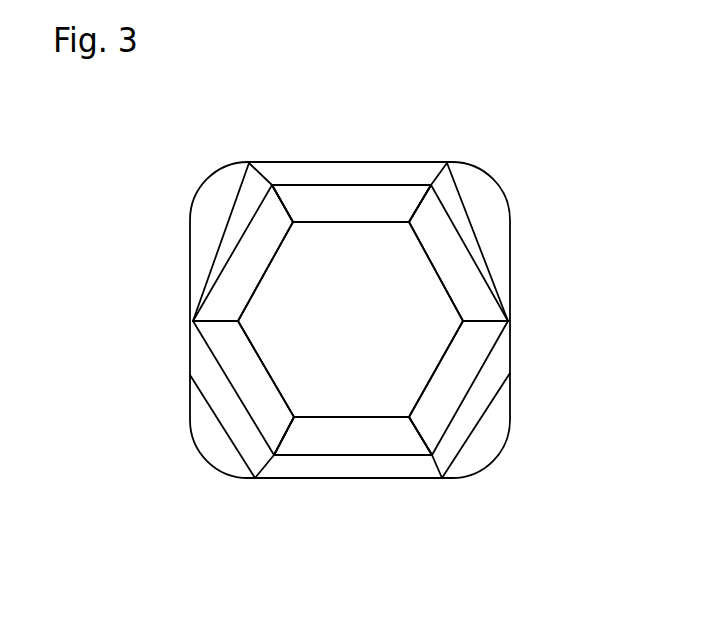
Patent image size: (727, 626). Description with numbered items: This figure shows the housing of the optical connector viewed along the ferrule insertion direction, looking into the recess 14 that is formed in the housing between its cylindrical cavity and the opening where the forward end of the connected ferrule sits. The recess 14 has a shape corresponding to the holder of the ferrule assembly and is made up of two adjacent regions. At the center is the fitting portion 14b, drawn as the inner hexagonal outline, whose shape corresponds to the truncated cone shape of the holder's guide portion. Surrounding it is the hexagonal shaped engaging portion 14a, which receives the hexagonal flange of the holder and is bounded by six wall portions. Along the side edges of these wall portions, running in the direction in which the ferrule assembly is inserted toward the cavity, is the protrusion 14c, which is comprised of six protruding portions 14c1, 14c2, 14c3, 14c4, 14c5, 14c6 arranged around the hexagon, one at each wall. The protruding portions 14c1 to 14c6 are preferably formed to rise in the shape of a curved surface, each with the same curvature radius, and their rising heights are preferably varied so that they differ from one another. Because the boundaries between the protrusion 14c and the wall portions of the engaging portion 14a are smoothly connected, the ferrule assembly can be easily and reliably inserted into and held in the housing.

The recess 14 is at (409, 157).
The engaging portion 14a is at (450, 218).
The fitting portion 14b is at (443, 268).
The protrusion 14c is at (203, 364).
The protruding portion 14c1 is at (290, 166).
The protruding portion 14c2 is at (492, 281).
The protruding portion 14c3 is at (497, 369).
The protruding portion 14c4 is at (372, 469).
The protruding portion 14c5 is at (230, 413).
The protruding portion 14c6 is at (210, 270).